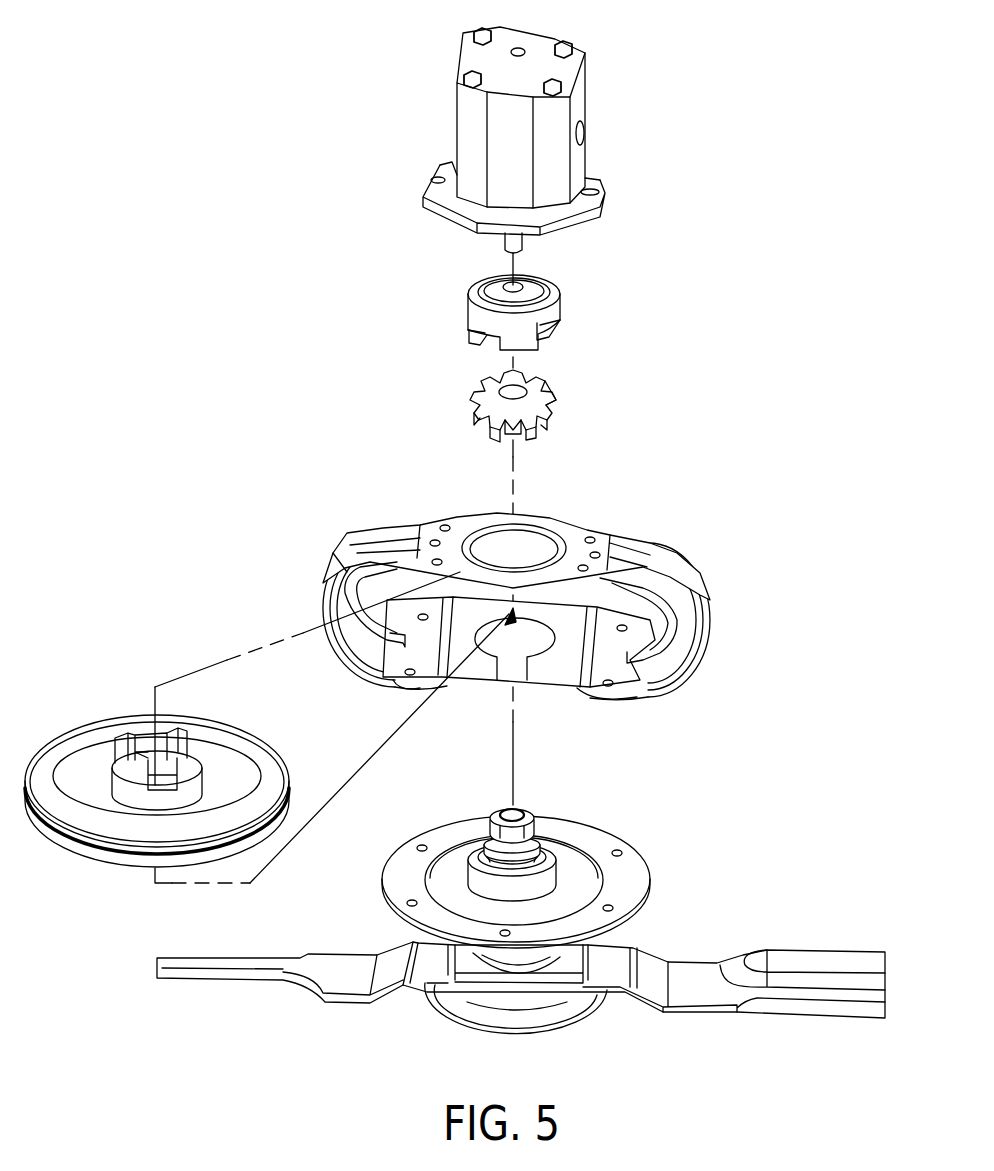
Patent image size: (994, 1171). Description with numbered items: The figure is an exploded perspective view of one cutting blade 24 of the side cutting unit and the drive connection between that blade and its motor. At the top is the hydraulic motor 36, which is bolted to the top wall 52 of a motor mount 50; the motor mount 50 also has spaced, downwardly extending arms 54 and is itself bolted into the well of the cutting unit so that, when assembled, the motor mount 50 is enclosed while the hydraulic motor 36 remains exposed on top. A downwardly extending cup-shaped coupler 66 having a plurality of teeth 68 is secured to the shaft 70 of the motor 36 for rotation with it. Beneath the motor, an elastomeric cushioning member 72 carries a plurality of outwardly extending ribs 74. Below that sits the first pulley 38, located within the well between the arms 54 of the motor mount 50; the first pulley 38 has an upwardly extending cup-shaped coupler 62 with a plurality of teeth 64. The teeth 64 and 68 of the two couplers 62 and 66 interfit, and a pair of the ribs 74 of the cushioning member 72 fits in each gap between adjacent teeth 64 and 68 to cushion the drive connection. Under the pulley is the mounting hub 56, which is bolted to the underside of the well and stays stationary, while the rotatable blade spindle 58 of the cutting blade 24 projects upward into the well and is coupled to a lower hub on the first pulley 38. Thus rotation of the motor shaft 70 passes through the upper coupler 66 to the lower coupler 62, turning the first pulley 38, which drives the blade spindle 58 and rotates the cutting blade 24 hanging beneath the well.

The cutting blade 24 is at (692, 960).
The hydraulic motor 36 is at (530, 40).
The first pulley 38 is at (182, 787).
The motor mount 50 is at (518, 586).
The top wall 52 is at (453, 542).
The arms 54 is at (325, 573).
The mounting hub 56 is at (530, 858).
The blade spindle 58 is at (520, 808).
The cup-shaped coupler 62 is at (203, 787).
The teeth 64 is at (123, 733).
The cup-shaped coupler 66 is at (520, 324).
The teeth 68 is at (470, 332).
The shaft 70 is at (520, 247).
The elastomeric cushioning member 72 is at (505, 385).
The ribs 74 is at (552, 417).